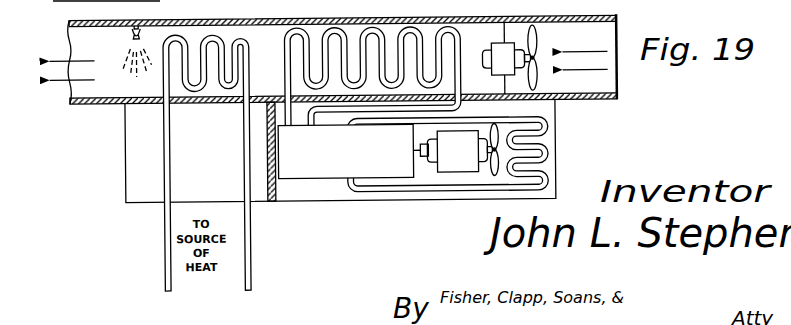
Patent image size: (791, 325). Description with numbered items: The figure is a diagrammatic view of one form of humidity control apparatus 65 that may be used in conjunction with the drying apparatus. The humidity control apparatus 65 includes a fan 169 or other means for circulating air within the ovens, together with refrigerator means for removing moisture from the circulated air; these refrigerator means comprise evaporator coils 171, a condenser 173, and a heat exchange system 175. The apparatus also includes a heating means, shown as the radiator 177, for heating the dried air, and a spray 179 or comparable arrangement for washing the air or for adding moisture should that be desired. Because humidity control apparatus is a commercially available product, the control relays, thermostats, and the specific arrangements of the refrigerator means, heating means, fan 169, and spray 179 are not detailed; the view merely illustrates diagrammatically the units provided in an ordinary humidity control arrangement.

The humidity control apparatus 65 is at (140, 203).
The fan 169 is at (538, 44).
The evaporator coils 171 is at (386, 33).
The condenser 173 is at (356, 158).
The heat exchange system 175 is at (546, 149).
The radiator 177 is at (203, 32).
The spray 179 is at (130, 33).